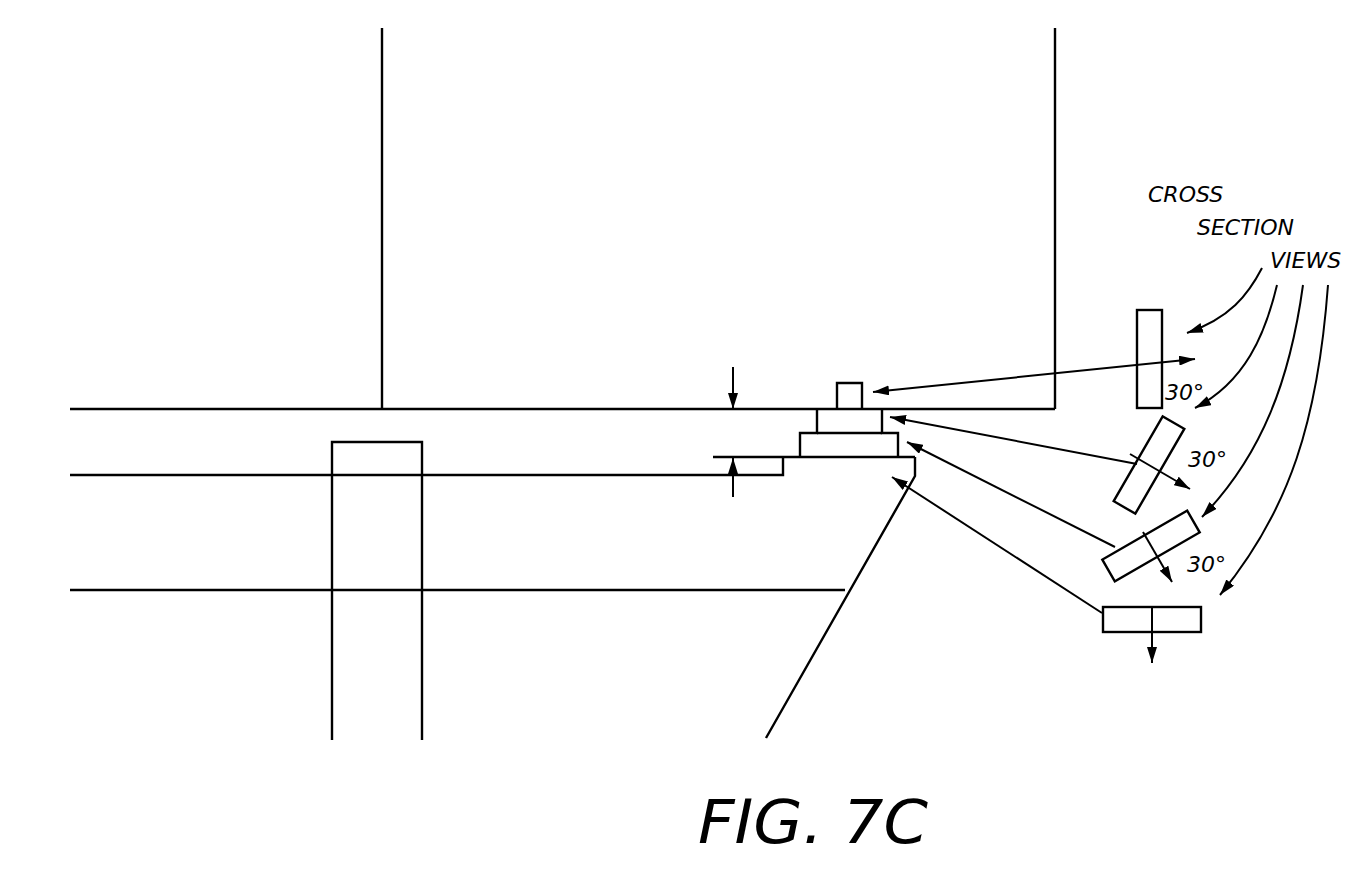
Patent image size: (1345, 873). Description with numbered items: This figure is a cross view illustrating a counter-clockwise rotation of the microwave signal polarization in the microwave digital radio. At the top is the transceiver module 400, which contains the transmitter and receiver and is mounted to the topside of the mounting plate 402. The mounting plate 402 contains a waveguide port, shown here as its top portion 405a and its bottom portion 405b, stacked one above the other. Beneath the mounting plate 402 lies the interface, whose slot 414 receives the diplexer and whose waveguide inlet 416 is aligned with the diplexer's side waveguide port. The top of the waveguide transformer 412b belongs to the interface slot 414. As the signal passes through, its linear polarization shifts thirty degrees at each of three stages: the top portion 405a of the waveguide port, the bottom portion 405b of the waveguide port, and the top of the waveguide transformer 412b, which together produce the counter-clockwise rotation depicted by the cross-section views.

The transceiver module 400 is at (1033, 127).
The mounting plate 402 is at (725, 433).
The top portion of the waveguide port 405a is at (833, 417).
The bottom portion of the waveguide port 405b is at (823, 450).
The waveguide transformer 412b is at (865, 465).
The slot 414 is at (758, 468).
The waveguide inlet 416 is at (388, 540).